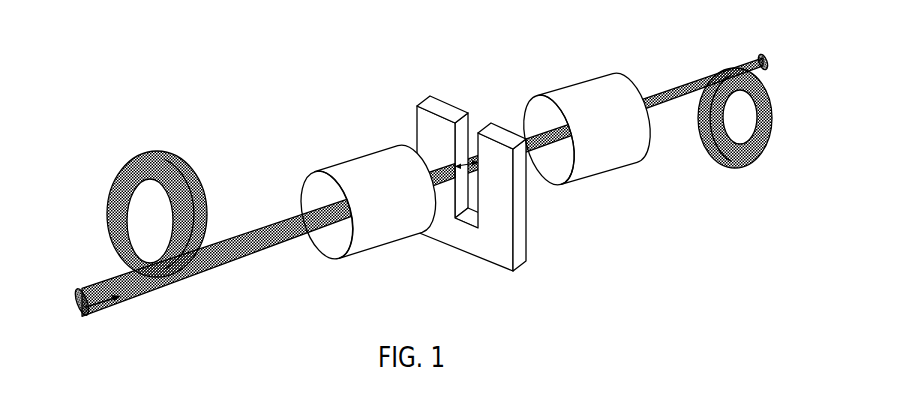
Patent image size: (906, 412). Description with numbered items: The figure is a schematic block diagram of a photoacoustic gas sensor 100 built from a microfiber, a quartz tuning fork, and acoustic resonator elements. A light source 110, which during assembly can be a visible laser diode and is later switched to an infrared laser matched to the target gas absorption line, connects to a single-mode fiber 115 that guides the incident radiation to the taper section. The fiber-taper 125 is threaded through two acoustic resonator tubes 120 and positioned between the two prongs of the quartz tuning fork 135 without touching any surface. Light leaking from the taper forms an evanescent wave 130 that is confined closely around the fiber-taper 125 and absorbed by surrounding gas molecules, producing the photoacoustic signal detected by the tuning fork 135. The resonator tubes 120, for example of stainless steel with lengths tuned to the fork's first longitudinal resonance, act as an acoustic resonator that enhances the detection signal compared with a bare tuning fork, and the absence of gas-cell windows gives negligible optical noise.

The photoacoustic gas sensor 100 is at (417, 185).
The light source 110 is at (93, 290).
The single-mode fiber 115 is at (205, 198).
The acoustic resonator tubes 120 is at (338, 168).
The fiber-taper 125 is at (433, 225).
The evanescent wave 130 is at (467, 150).
The quartz tuning fork 135 is at (511, 262).